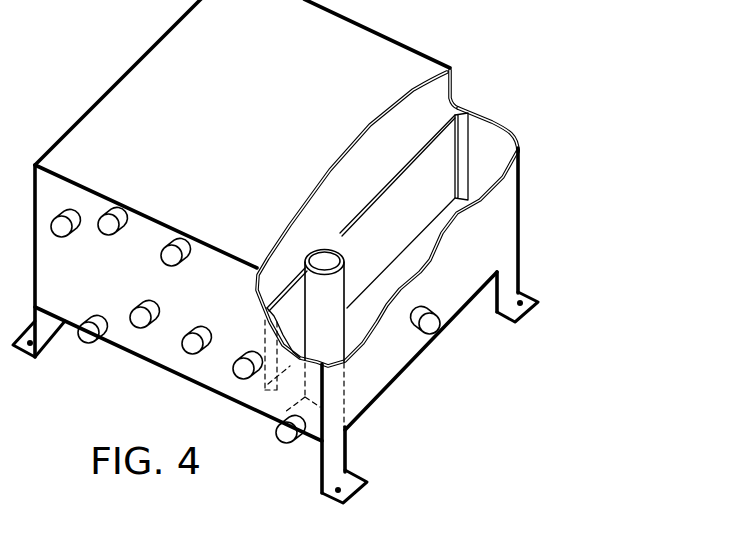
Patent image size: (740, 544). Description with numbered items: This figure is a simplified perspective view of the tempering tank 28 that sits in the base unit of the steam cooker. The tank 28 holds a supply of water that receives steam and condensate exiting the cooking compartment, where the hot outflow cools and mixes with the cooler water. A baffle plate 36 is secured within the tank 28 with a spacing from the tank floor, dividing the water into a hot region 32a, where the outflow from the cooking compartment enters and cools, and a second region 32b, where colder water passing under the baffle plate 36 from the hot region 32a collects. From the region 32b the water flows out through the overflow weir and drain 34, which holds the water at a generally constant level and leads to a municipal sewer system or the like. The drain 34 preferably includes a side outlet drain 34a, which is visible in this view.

The tempering tank 28 is at (510, 232).
The hot region 32a is at (438, 104).
The region 32b is at (485, 135).
The overflow weir and drain 34 is at (345, 277).
The side outlet drain 34a is at (281, 430).
The baffle plate 36 is at (424, 211).